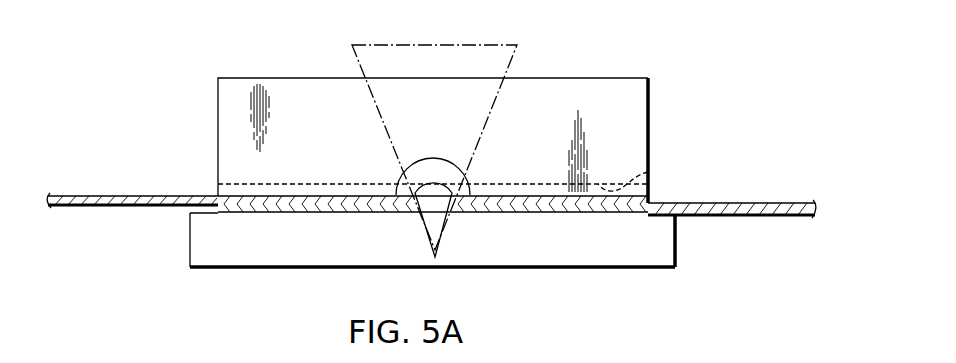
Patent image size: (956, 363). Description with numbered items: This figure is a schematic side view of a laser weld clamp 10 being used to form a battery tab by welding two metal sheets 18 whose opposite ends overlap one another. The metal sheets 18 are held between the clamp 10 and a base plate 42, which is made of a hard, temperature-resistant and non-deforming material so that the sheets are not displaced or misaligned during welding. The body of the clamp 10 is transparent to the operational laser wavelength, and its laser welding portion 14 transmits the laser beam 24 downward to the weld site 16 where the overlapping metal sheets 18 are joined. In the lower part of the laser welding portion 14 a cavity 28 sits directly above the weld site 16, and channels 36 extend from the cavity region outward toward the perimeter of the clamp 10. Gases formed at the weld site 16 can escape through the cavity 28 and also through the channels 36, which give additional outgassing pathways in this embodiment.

The laser weld clamp 10 is at (640, 58).
The laser welding portion 14 is at (650, 134).
The weld site 16 is at (433, 199).
The metal sheets 18 is at (128, 197).
The laser beam 24 is at (508, 62).
The cavity 28 is at (402, 193).
The channels 36 is at (230, 186).
The base plate 42 is at (678, 242).